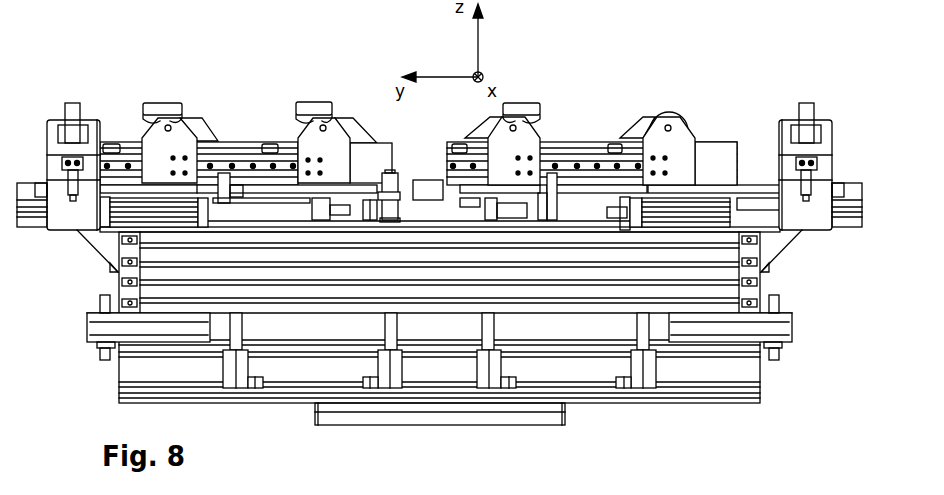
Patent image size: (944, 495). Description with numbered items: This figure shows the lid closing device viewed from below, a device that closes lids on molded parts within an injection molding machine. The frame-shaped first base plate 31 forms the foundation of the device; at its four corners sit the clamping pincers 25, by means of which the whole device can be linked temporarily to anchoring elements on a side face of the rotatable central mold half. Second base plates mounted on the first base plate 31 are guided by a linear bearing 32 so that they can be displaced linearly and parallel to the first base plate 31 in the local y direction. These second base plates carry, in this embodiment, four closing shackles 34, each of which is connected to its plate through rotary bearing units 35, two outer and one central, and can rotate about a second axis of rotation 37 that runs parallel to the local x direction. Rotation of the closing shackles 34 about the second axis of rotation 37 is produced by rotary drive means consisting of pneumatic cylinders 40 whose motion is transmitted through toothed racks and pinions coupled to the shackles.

The clamping pincer 25 is at (73, 82).
The first base plate 31 is at (680, 265).
The linear bearing 32 is at (581, 142).
The closing shackle 34 is at (163, 100).
The rotary bearing unit 35 is at (685, 143).
The second axis of rotation 37 is at (333, 113).
The pneumatic cylinder 40 is at (168, 217).